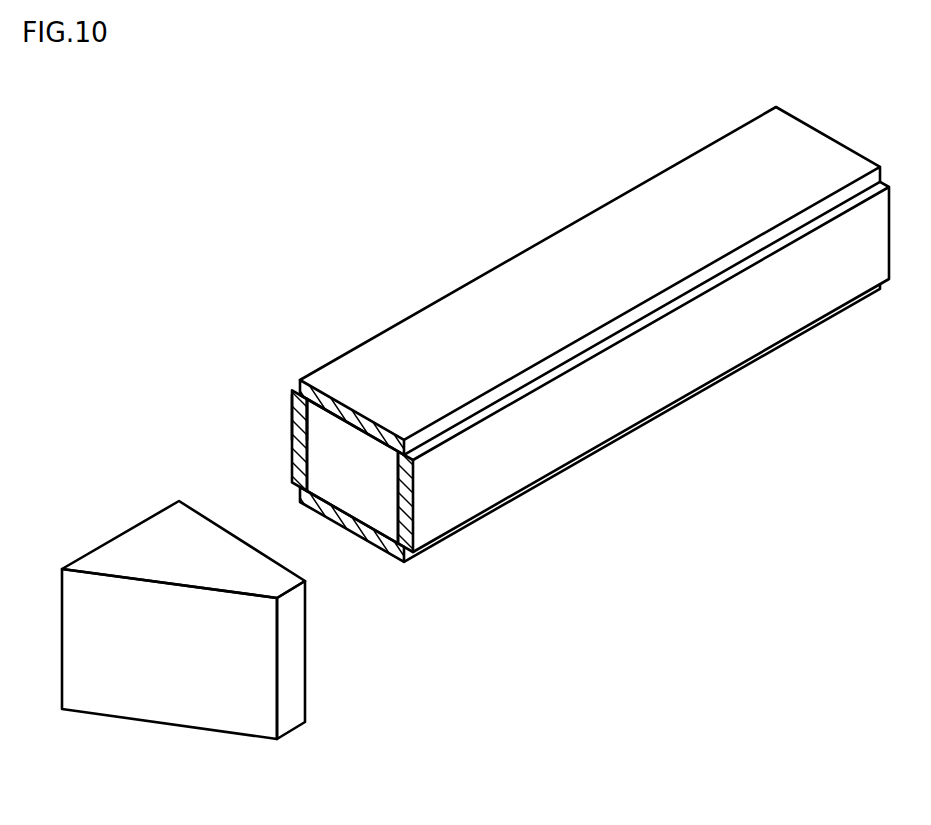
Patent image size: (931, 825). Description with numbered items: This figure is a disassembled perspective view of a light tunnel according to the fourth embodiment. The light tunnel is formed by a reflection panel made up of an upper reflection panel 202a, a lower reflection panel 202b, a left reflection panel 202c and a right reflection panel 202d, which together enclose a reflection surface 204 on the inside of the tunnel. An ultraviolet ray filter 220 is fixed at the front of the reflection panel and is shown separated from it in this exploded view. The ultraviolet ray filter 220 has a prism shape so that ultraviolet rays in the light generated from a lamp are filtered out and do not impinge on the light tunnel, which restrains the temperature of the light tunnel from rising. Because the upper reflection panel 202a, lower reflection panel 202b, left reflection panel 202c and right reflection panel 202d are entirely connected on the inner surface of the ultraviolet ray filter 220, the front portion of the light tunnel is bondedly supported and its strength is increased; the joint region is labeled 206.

The upper reflection panel 202a is at (580, 238).
The lower reflection panel 202b is at (335, 512).
The left reflection panel 202c is at (296, 455).
The right reflection panel 202d is at (640, 393).
The reflection surface 204 is at (382, 498).
The joint portion 206 is at (303, 424).
The ultraviolet ray filter 220 is at (165, 537).